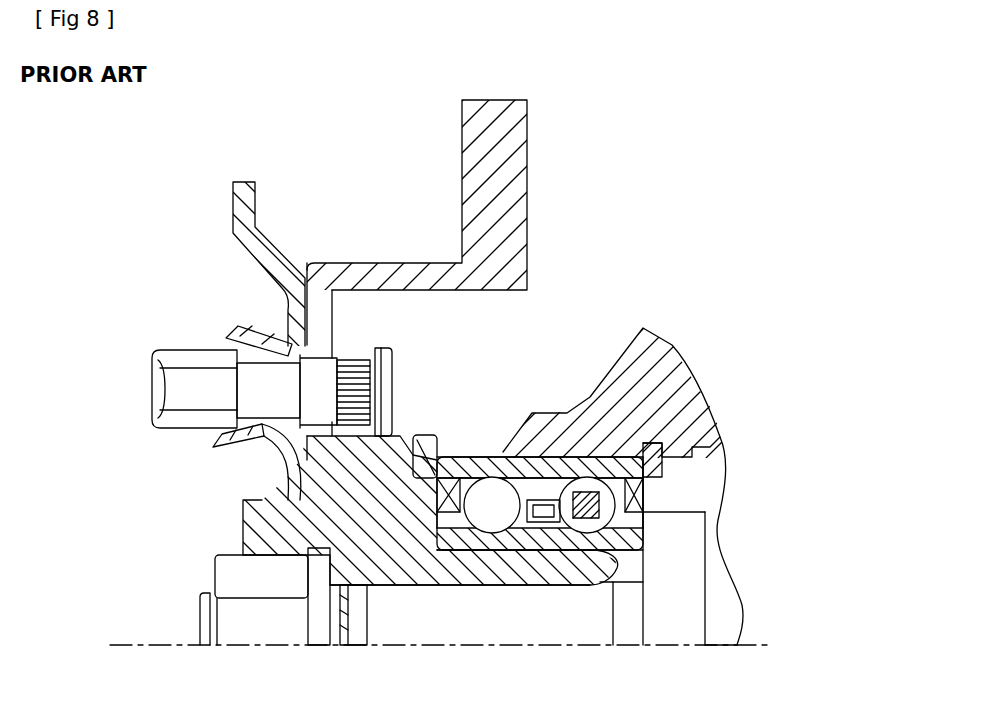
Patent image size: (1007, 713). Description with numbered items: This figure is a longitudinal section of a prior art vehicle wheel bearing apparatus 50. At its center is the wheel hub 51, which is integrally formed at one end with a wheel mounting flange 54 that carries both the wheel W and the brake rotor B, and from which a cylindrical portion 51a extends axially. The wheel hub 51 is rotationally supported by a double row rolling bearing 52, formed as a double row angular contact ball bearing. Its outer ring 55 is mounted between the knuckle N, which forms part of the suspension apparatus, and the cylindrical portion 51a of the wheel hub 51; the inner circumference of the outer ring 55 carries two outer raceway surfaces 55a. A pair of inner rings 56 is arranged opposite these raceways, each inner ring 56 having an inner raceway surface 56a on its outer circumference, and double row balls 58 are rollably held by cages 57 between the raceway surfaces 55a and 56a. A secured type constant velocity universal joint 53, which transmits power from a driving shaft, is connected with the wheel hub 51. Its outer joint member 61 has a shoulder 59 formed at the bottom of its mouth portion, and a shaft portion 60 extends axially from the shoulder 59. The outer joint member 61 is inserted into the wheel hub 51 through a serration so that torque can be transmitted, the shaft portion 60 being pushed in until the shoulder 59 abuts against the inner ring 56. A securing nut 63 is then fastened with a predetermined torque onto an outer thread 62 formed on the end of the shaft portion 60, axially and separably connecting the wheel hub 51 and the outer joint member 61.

The wheel bearing apparatus 50 is at (569, 312).
The wheel hub 51 is at (268, 480).
The cylindrical portion 51a is at (522, 586).
The double row rolling bearing 52 is at (548, 455).
The constant velocity universal joint 53 is at (730, 613).
The wheel mounting flange 54 is at (262, 339).
The outer ring 55 is at (523, 468).
The outer raceway surfaces 55a is at (447, 480).
The inner rings 56 is at (635, 530).
The inner raceway surfaces 56a is at (612, 495).
The cages 57 is at (588, 560).
The balls 58 is at (500, 495).
The shoulder 59 is at (662, 502).
The shaft portion 60 is at (625, 592).
The outer joint member 61 is at (681, 586).
The outer thread 62 is at (358, 598).
The securing nut 63 is at (240, 575).
The brake rotor B is at (385, 262).
The wheel W is at (282, 290).
The knuckle N is at (676, 345).